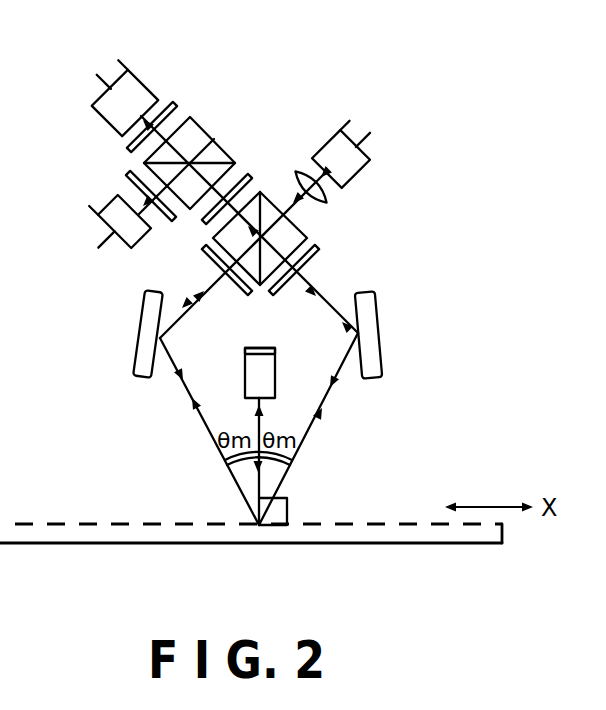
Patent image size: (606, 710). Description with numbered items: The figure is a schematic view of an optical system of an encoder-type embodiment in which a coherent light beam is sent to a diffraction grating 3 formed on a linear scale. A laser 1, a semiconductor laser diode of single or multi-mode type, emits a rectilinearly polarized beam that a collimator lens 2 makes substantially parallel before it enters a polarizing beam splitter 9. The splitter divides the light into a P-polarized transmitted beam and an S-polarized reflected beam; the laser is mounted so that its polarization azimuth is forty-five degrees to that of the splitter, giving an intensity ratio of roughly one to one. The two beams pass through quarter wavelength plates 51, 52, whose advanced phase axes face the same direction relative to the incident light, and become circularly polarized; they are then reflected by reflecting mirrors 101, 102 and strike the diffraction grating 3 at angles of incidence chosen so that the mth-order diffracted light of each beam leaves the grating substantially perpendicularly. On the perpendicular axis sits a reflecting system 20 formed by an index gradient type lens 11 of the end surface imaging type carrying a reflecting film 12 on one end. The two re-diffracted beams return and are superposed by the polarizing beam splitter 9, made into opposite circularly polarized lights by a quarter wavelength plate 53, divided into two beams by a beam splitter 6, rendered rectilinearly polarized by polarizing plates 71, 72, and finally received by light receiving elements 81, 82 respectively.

The laser 1 is at (360, 168).
The collimator lens 2 is at (320, 201).
The diffraction grating 3 is at (485, 540).
The beam splitter 6 is at (204, 145).
The polarizing beam splitter 9 is at (271, 206).
The index gradient type lens 11 is at (266, 376).
The reflecting film 12 is at (260, 349).
The reflecting system 20 is at (262, 350).
The quarter wavelength plate 51 is at (317, 254).
The quarter wavelength plate 52 is at (207, 252).
The quarter wavelength plate 53 is at (246, 181).
The polarizing plate 71 is at (177, 107).
The polarizing plate 72 is at (130, 178).
The light receiving element 81 is at (128, 93).
The light receiving element 82 is at (112, 218).
The reflecting mirror 101 is at (372, 353).
The reflecting mirror 102 is at (138, 352).